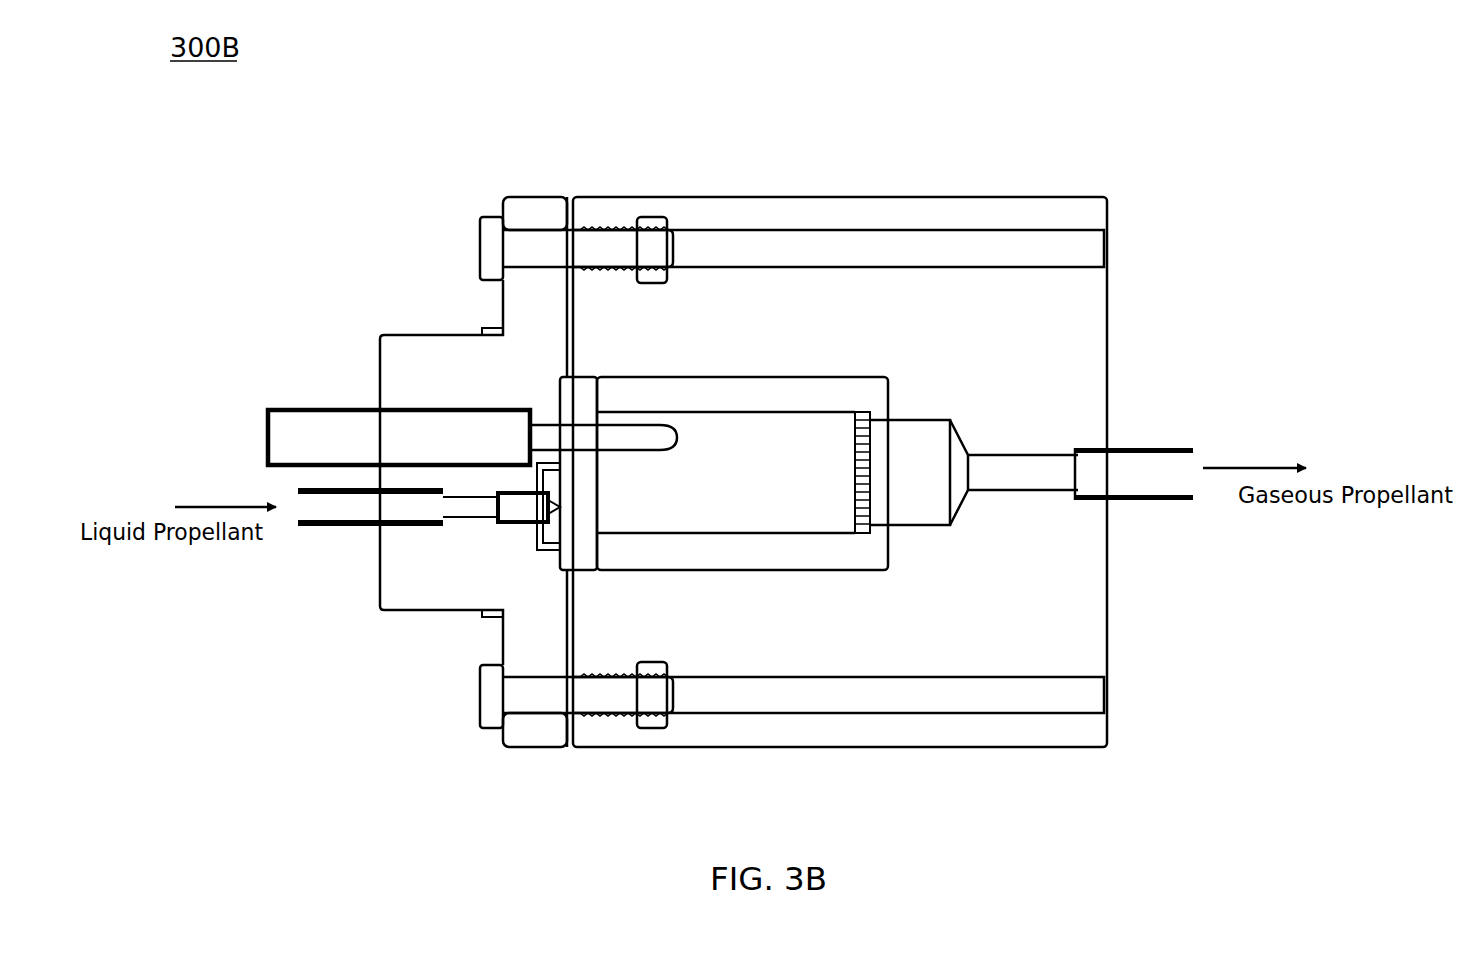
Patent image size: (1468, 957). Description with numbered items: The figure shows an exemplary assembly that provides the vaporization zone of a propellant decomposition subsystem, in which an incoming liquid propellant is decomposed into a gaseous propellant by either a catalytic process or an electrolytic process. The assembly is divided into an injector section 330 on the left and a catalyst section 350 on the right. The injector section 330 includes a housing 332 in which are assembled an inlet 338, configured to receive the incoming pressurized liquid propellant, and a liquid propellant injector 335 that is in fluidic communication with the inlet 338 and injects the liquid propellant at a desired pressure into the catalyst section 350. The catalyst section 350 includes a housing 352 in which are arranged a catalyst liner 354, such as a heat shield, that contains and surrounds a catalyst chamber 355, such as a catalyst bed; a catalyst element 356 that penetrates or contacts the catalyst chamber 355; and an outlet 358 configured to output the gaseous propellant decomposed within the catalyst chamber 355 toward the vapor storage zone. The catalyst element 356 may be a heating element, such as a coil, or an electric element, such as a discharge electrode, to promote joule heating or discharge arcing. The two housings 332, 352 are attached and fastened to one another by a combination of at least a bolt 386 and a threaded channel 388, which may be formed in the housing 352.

The injector section 330 is at (573, 148).
The housing 332 is at (452, 333).
The liquid propellant injector 335 is at (515, 532).
The inlet 338 is at (327, 535).
The catalyst section 350 is at (1105, 148).
The housing 352 is at (1115, 317).
The catalyst liner 354 is at (751, 376).
The catalyst chamber 355 is at (809, 411).
The catalyst element 356 is at (305, 405).
The outlet 358 is at (1162, 510).
The bolt 386 is at (490, 735).
The threaded channel 388 is at (614, 719).